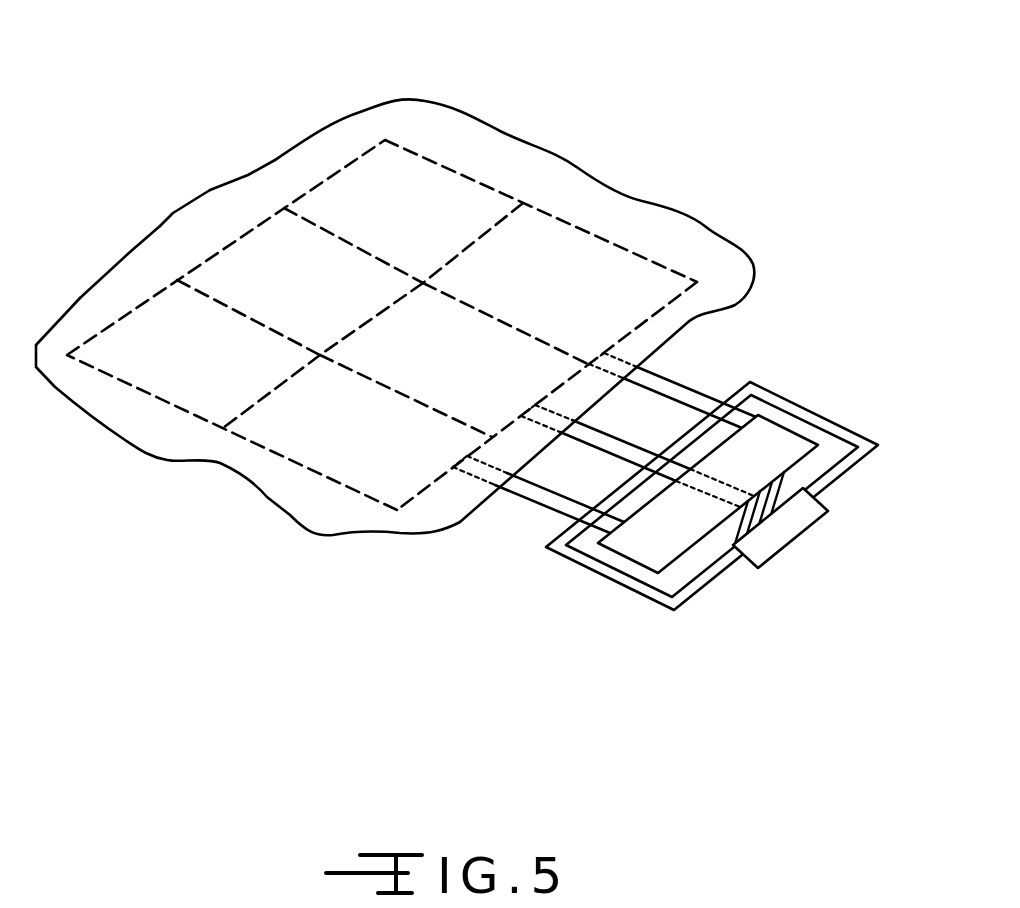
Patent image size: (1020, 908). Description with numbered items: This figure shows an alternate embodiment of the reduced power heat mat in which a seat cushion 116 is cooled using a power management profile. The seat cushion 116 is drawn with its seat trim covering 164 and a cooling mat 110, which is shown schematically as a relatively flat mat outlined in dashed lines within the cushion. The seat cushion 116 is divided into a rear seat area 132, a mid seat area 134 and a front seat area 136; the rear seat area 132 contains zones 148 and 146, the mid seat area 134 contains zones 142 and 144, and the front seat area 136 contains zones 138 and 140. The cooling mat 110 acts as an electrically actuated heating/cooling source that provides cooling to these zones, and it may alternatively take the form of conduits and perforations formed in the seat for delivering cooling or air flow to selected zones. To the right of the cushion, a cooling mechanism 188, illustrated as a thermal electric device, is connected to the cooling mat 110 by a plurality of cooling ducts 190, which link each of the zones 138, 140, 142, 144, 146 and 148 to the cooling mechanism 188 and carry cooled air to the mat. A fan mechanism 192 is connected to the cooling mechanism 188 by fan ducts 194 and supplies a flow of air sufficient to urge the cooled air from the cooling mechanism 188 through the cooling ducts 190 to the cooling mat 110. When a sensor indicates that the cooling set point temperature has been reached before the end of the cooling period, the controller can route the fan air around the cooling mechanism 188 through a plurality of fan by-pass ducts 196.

The cooling mat 110 is at (348, 167).
The seat cushion 116 is at (140, 277).
The rear seat area 132 is at (733, 263).
The mid seat area 134 is at (218, 205).
The front seat area 136 is at (75, 328).
The seat trim covering 164 is at (183, 227).
The zone 138 is at (307, 442).
The zone 140 is at (200, 385).
The zone 142 is at (423, 370).
The zone 144 is at (257, 267).
The zone 146 is at (597, 277).
The zone 148 is at (443, 203).
The cooling mechanism 188 is at (612, 567).
The cooling ducts 190 is at (688, 382).
The fan mechanism 192 is at (785, 545).
The fan ducts 194 is at (775, 495).
The fan by-pass ducts 196 is at (808, 410).